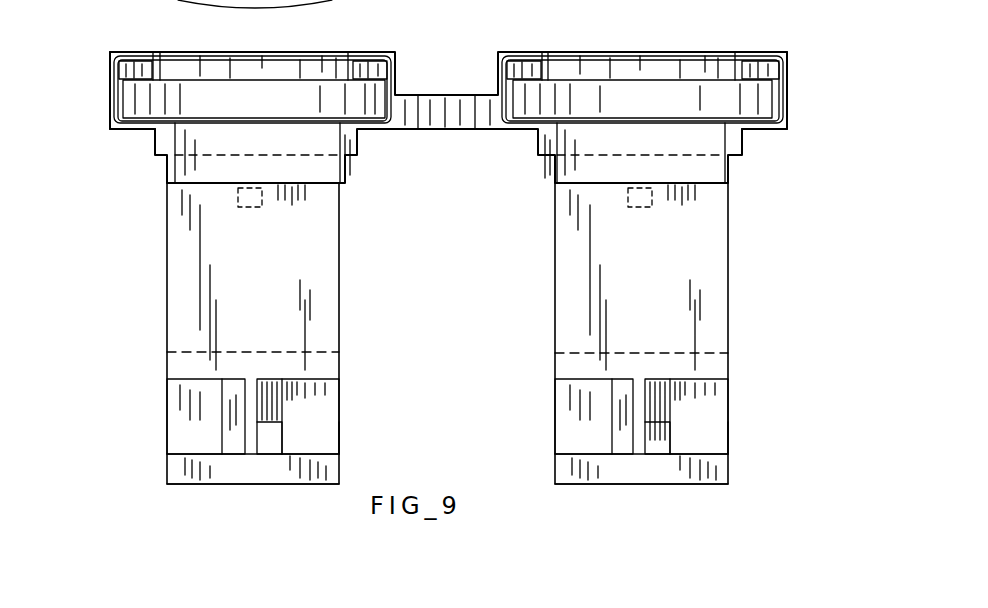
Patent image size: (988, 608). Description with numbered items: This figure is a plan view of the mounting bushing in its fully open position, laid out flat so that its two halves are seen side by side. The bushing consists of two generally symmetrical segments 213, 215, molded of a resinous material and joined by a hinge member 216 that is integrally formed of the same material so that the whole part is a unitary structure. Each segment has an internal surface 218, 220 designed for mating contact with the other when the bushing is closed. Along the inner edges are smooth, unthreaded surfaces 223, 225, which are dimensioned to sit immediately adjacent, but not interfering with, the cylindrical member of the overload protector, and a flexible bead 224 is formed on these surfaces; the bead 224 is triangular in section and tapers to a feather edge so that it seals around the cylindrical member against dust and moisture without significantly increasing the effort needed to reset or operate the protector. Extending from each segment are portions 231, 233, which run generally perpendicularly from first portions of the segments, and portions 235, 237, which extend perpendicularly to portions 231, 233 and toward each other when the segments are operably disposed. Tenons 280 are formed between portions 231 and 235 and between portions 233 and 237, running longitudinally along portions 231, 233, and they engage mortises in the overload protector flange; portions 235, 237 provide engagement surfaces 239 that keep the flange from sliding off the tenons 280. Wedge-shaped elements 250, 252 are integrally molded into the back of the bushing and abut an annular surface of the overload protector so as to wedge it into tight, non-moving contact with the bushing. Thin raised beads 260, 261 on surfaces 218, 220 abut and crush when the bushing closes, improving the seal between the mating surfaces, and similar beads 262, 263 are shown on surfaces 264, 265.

The segment 213 is at (188, 62).
The segment 215 is at (622, 66).
The hinge member 216 is at (446, 98).
The internal surface 218 is at (116, 52).
The internal surface 220 is at (808, 37).
The surface 223 is at (272, 146).
The flexible bead 224 is at (186, 118).
The surface 225 is at (660, 146).
The portion 231 is at (339, 280).
The portion 233 is at (555, 283).
The portion 235 is at (240, 485).
The portion 237 is at (658, 486).
The engagement surface 239 is at (313, 454).
The wedge-shaped element 250 is at (246, 208).
The wedge-shaped element 252 is at (640, 208).
The bead 260 is at (130, 60).
The bead 261 is at (762, 60).
The bead 262 is at (380, 60).
The bead 263 is at (514, 60).
The surface 264 is at (366, 56).
The surface 265 is at (545, 58).
The tenon 280 is at (258, 424).